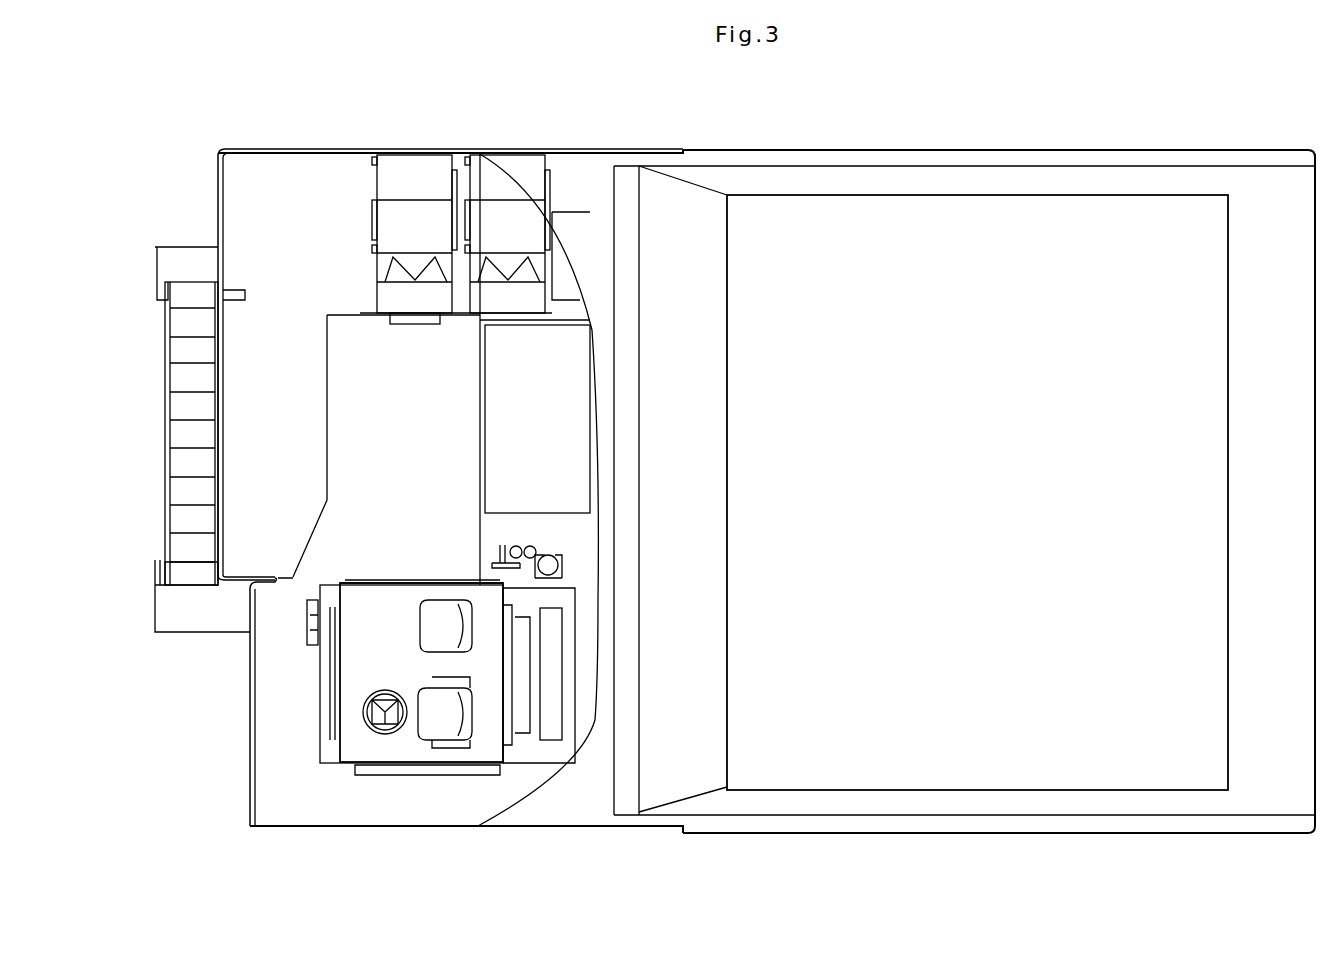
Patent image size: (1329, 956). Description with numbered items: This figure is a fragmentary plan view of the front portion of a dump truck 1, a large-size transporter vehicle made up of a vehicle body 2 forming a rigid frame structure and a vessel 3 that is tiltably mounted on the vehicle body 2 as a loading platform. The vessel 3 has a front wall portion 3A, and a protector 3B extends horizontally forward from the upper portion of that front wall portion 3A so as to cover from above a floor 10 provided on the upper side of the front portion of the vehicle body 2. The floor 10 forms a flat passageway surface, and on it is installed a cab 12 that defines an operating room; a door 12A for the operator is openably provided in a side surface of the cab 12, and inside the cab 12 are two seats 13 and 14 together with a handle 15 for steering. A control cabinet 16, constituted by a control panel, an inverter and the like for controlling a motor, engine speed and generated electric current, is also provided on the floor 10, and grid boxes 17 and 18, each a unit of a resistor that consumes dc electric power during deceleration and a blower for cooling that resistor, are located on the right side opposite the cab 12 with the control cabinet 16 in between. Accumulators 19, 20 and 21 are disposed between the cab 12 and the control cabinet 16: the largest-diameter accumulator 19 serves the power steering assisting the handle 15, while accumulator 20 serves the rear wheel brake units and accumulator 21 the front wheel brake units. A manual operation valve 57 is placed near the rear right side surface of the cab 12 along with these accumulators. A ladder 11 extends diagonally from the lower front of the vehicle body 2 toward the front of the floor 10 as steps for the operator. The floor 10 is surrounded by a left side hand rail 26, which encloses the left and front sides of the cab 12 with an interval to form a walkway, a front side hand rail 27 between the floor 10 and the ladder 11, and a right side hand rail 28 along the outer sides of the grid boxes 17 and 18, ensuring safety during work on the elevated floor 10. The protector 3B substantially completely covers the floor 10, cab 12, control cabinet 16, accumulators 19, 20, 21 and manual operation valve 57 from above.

The dump truck 1 is at (1041, 138).
The vehicle body 2 is at (325, 185).
The vessel 3 is at (1115, 765).
The front wall portion 3A is at (686, 740).
The protector 3B is at (566, 805).
The floor 10 is at (375, 362).
The ladder 11 is at (168, 358).
The cab 12 is at (340, 762).
The door 12A is at (388, 580).
The seat 13 is at (455, 722).
The seat 14 is at (432, 630).
The handle 15 is at (368, 707).
The control cabinet 16 is at (572, 367).
The grid box 17 is at (505, 215).
The grid box 18 is at (413, 215).
The accumulator 19 is at (555, 553).
The accumulator 20 is at (530, 546).
The accumulator 21 is at (514, 546).
The left side hand rail 26 is at (362, 830).
The front side hand rail 27 is at (215, 405).
The right side hand rail 28 is at (278, 150).
The manual operation valve 57 is at (497, 565).